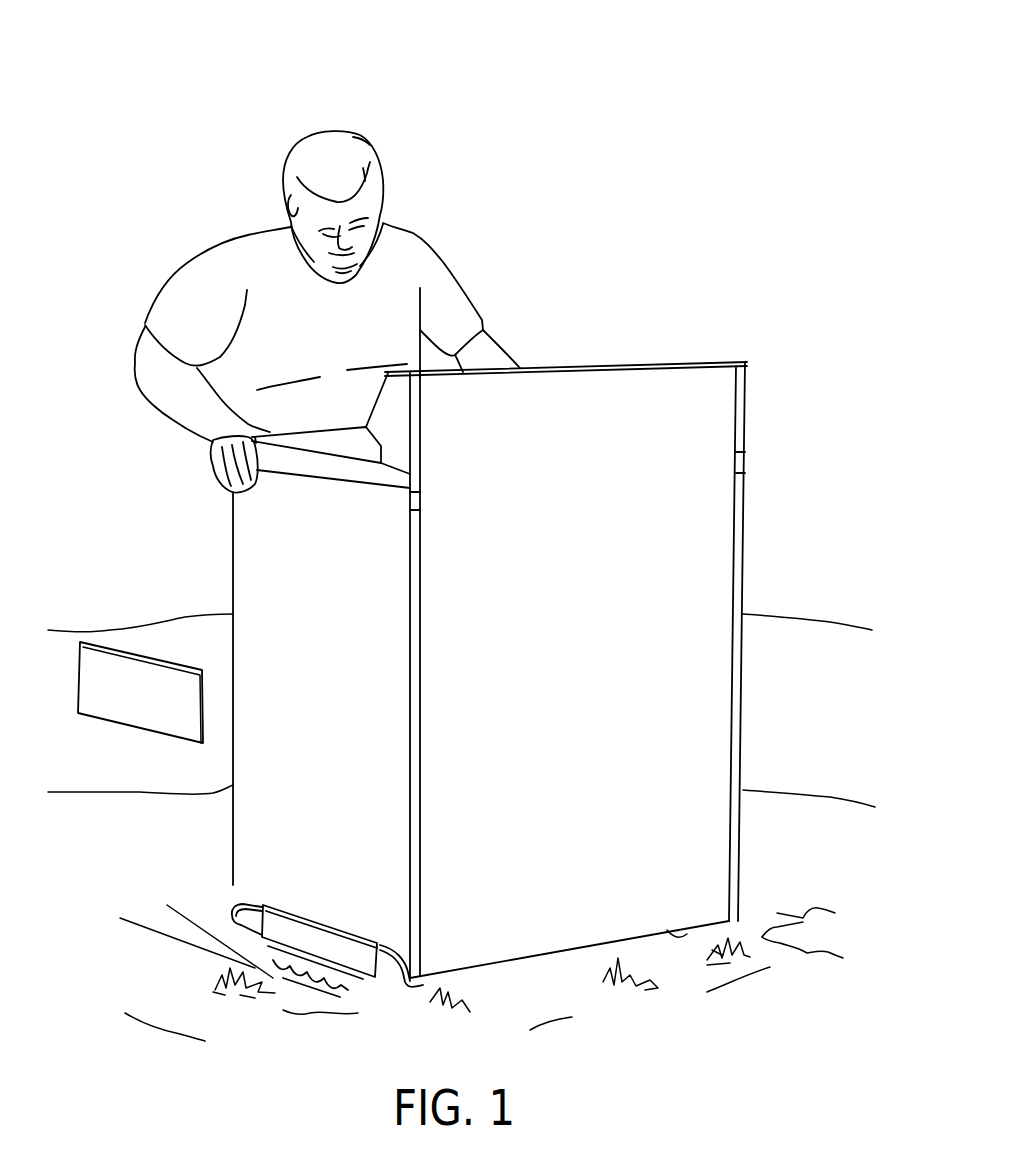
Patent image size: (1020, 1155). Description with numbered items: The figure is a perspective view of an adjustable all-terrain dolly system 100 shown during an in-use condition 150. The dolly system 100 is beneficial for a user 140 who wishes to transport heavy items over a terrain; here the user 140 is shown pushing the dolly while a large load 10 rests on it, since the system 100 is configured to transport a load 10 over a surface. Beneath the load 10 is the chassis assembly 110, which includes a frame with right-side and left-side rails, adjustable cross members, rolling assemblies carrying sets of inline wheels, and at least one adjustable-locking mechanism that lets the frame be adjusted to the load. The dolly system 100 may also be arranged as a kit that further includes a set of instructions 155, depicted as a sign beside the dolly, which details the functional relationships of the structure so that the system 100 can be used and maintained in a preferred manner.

The adjustable all-terrain dolly system 100 is at (582, 92).
The chassis assembly 110 is at (650, 123).
The in-use condition 150 is at (710, 165).
The user 140 is at (212, 233).
The load 10 is at (745, 511).
The set of instructions 155 is at (163, 727).